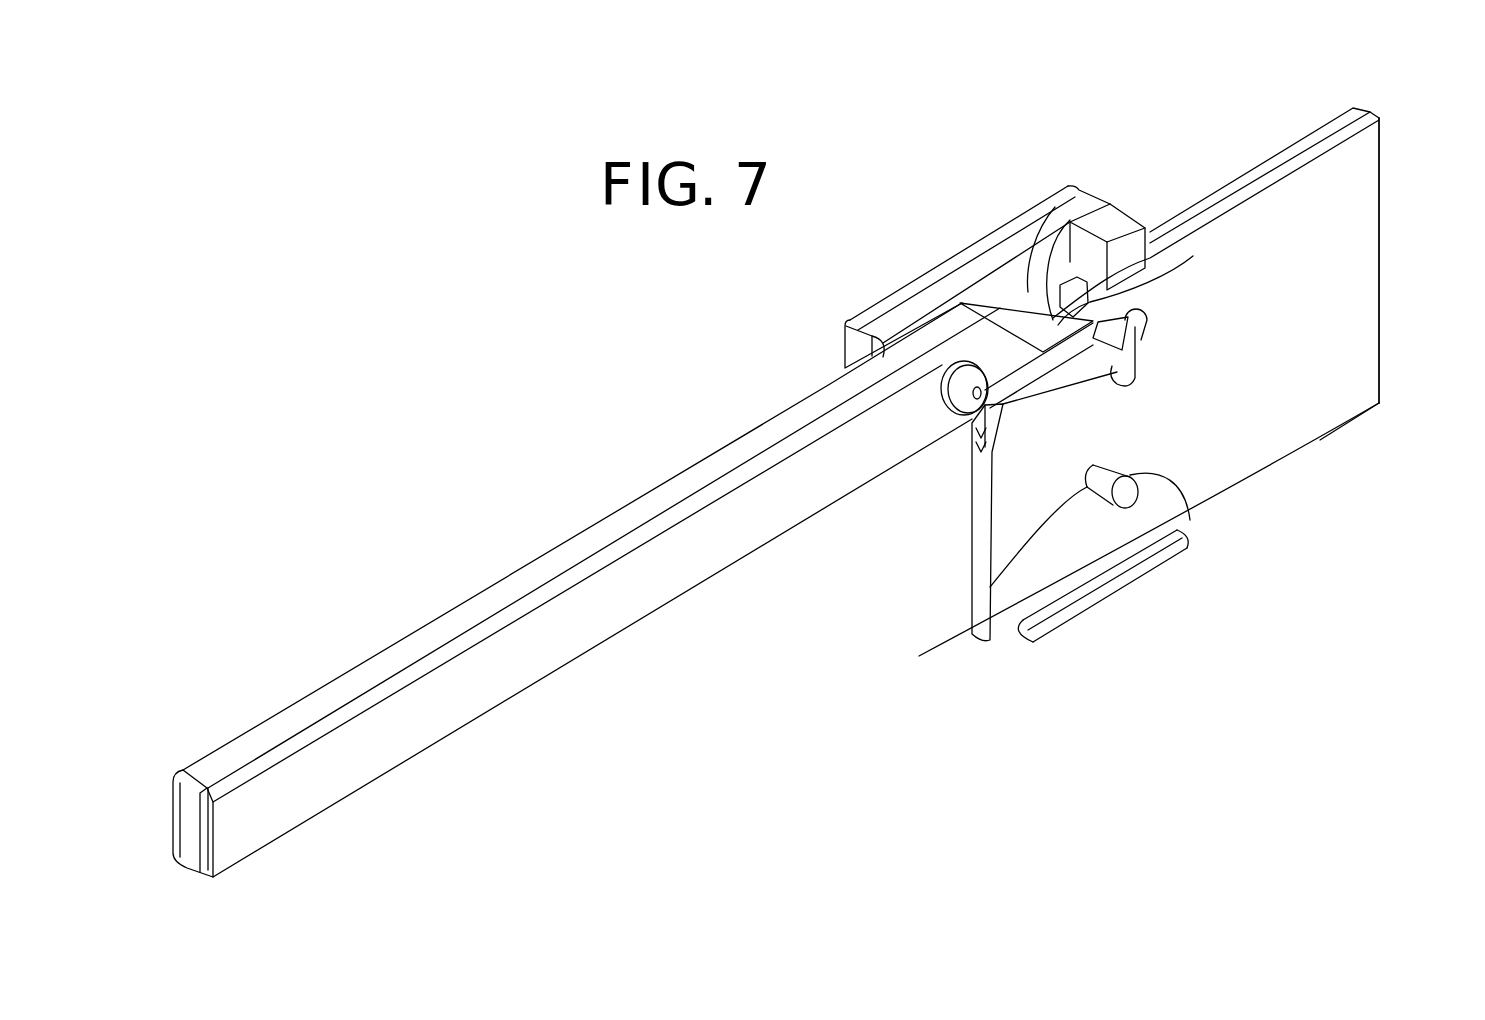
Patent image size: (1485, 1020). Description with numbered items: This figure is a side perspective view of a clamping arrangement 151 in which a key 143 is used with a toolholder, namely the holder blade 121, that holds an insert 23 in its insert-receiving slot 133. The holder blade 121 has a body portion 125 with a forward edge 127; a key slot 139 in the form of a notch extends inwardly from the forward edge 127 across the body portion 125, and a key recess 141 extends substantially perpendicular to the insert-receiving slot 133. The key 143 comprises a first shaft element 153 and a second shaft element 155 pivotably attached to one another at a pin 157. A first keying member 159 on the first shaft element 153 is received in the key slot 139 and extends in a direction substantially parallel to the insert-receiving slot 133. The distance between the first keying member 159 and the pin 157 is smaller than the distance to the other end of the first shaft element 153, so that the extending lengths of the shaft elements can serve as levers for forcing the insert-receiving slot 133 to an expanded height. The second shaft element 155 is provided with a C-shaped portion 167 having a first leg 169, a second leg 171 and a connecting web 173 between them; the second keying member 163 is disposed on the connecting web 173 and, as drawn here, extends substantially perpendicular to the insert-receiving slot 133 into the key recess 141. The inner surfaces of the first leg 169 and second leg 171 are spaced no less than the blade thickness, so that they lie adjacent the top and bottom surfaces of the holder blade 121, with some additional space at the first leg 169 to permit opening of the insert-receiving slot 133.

The insert 23 is at (977, 432).
The holder blade 121 is at (1400, 305).
The body portion 125 is at (1343, 240).
The forward edge 127 is at (980, 525).
The insert-receiving slot 133 is at (1140, 343).
The key slot 139 is at (1193, 256).
The key recess 141 is at (919, 656).
The key 143 is at (397, 601).
The clamping arrangement 151 is at (893, 268).
The first shaft element 153 is at (612, 507).
The second shaft element 155 is at (1028, 188).
The pin 157 is at (975, 395).
The first keying member 159 is at (1117, 222).
The second keying member 163 is at (1190, 520).
The C-shaped portion 167 is at (1020, 300).
The first leg 169 is at (1132, 212).
The second leg 171 is at (1072, 610).
The connecting web 173 is at (1055, 207).